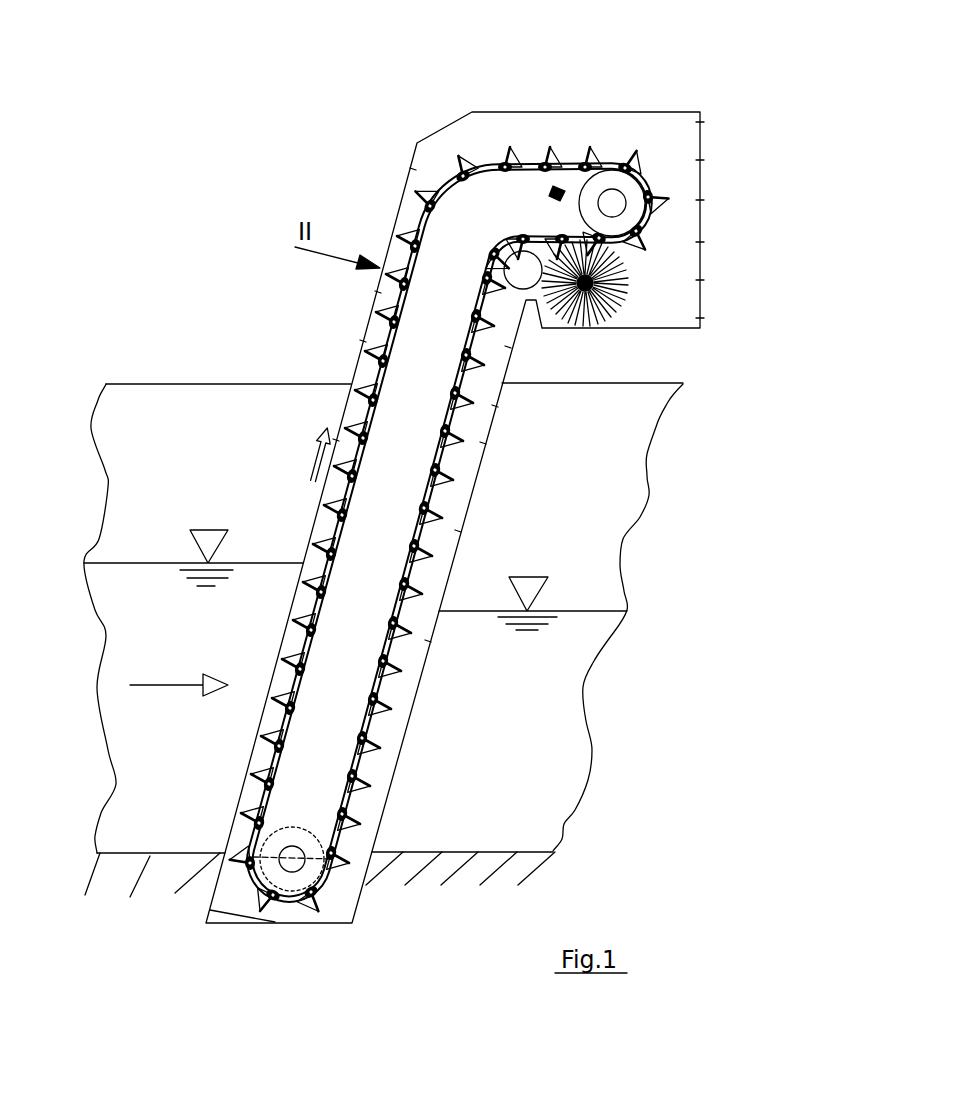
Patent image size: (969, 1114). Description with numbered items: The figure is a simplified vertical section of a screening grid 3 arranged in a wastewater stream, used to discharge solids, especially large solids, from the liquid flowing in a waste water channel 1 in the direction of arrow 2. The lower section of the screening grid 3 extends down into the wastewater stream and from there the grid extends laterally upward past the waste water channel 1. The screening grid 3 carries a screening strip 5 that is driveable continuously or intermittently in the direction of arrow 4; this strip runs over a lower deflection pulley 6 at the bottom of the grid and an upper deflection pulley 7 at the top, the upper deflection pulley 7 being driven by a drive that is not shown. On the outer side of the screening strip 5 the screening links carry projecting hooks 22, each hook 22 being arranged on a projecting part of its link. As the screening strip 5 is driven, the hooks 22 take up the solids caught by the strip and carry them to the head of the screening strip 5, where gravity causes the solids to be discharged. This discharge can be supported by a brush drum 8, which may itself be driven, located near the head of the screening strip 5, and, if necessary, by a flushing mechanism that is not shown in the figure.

The waste water channel 1 is at (150, 830).
The arrow 2 is at (175, 685).
The screening grid 3 is at (341, 338).
The arrow 4 is at (312, 462).
The screening strip 5 is at (432, 495).
The lower deflection pulley 6 is at (302, 818).
The upper deflection pulley 7 is at (627, 190).
The brush drum 8 is at (577, 330).
The projecting hook 22 is at (393, 227).